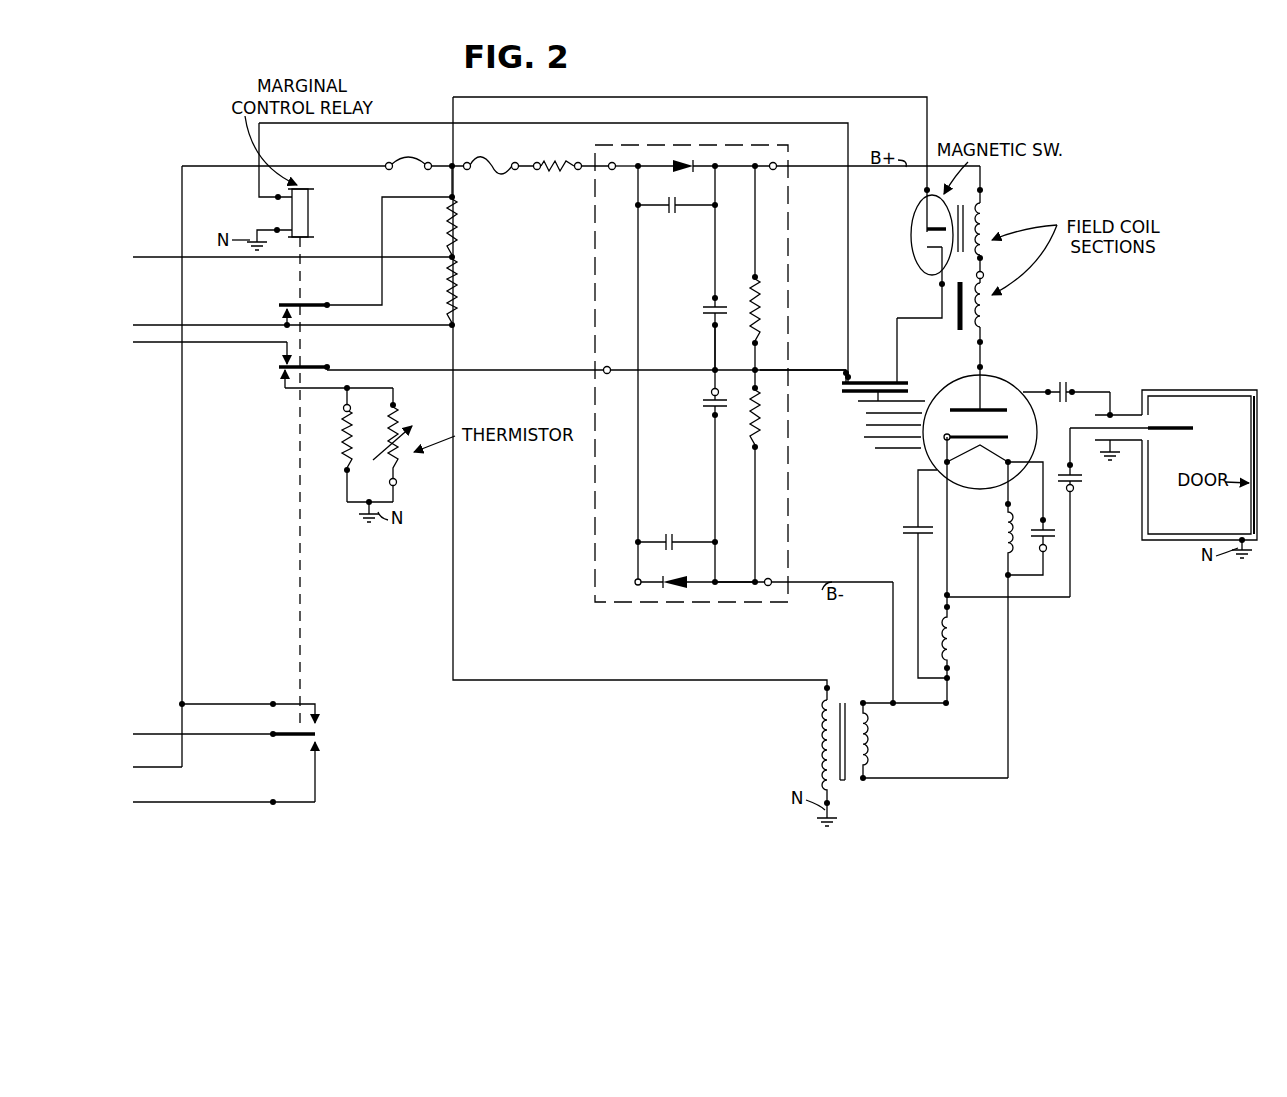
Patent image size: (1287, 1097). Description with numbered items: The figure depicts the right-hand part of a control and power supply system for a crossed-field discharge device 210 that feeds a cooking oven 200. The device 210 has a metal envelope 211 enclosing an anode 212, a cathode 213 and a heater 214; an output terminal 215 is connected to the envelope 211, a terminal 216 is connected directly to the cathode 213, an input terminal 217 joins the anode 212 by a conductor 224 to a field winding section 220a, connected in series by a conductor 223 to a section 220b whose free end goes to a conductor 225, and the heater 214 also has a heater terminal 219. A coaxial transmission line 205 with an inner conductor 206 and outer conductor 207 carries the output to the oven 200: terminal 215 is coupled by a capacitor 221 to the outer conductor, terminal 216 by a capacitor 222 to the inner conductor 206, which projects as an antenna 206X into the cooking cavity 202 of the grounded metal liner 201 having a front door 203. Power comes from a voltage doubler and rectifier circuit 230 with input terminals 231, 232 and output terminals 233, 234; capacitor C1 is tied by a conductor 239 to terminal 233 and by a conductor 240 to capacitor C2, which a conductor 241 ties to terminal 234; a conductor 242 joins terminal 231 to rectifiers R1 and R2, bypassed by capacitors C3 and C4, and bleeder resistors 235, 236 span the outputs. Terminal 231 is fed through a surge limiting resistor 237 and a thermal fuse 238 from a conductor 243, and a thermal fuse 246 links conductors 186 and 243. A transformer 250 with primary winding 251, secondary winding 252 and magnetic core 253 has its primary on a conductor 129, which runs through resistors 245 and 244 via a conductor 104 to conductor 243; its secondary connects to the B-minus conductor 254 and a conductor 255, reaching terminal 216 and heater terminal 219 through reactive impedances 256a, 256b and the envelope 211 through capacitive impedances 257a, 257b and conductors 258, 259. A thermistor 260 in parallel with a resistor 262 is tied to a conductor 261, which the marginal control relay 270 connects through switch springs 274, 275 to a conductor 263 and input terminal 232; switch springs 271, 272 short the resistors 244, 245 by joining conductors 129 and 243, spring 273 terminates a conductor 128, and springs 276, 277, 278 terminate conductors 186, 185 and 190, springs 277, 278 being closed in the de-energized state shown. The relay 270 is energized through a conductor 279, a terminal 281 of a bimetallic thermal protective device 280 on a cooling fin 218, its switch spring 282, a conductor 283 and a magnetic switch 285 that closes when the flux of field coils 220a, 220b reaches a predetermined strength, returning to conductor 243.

The conductor 186 is at (216, 164).
The conductor 104 is at (170, 254).
The conductor 129 is at (170, 324).
The conductor 128 is at (172, 343).
The conductor 190 is at (166, 733).
The conductor 185 is at (166, 800).
The conductor 279 is at (297, 125).
The marginal control relay 270 is at (302, 200).
The thermal fuse 246 is at (406, 163).
The thermal fuse 238 is at (502, 162).
The surge limiting resistor 237 is at (560, 174).
The input terminal 231 is at (615, 171).
The output terminal 233 is at (778, 171).
The conductor 243 is at (448, 181).
The resistor 244 is at (460, 226).
The resistor 245 is at (460, 285).
The switch spring 271 is at (276, 306).
The switch spring 272 is at (325, 304).
The switch spring 273 is at (292, 354).
The switch spring 275 is at (277, 366).
The switch spring 274 is at (282, 379).
The conductor 263 is at (565, 368).
The conductor 261 is at (358, 388).
The resistor 262 is at (342, 445).
The thermistor 260 is at (403, 418).
The switch spring 276 is at (320, 718).
The switch spring 278 is at (320, 734).
The switch spring 277 is at (318, 750).
The voltage doubler and rectifier circuit 230 is at (748, 143).
The conductor 242 is at (636, 300).
The conductor 239 is at (716, 266).
The rectifying diode R1 is at (683, 172).
The rectifying diode R2 is at (675, 580).
The capacitor C1 is at (710, 306).
The capacitor C2 is at (705, 402).
The capacitor C3 is at (676, 212).
The capacitor C4 is at (671, 536).
The conductor 240 is at (713, 366).
The bleeder or stabilizing resistor 235 is at (760, 306).
The bleeder or stabilizing resistor 236 is at (760, 412).
The input terminal 232 is at (609, 375).
The conductor 241 is at (730, 586).
The output terminal 234 is at (770, 588).
The B− conductor 254 is at (850, 583).
The terminal 281 is at (842, 372).
The thermal protective device 280 is at (883, 380).
The switch spring 282 is at (899, 380).
The cooling fin 218 is at (858, 411).
The conductor 283 is at (938, 291).
The magnetic switch 285 is at (912, 248).
The conductor 225 is at (985, 182).
The field winding section 220b is at (988, 234).
The conductor 223 is at (984, 268).
The field winding section 220a is at (988, 313).
The conductor 224 is at (984, 342).
The input terminal 217 is at (984, 365).
The crossed-field discharge device 210 is at (1013, 369).
The anode 212 is at (1010, 393).
The cathode 213 is at (986, 436).
The heater 214 is at (982, 452).
The envelope 211 is at (1032, 391).
The capacitor 221 is at (1068, 390).
The output terminal 215 is at (1035, 395).
The transmission line 205 is at (1120, 412).
The outer conductor 207 is at (1128, 443).
The antenna 206X is at (1180, 428).
The inner conductor 206 is at (1076, 477).
The capacitor 222 is at (1074, 491).
The conductor 259 is at (1048, 508).
The capacitive impedance 257b is at (1050, 540).
The output terminal 216 is at (948, 591).
The heater terminal 219 is at (1005, 505).
The reactive impedance 256a is at (953, 641).
The reactive impedance 256b is at (1012, 581).
The conductor 258 is at (916, 490).
The capacitive impedance 257a is at (905, 535).
The coupling magnetic core 253 is at (852, 698).
The primary winding 251 is at (820, 745).
The secondary winding 252 is at (870, 736).
The transformer 250 is at (851, 783).
The conductor 255 is at (932, 778).
The metal liner 201 is at (1235, 388).
The cooking cavity 202 is at (1188, 530).
The front door 203 is at (1250, 496).
The cooking oven 200 is at (1140, 549).